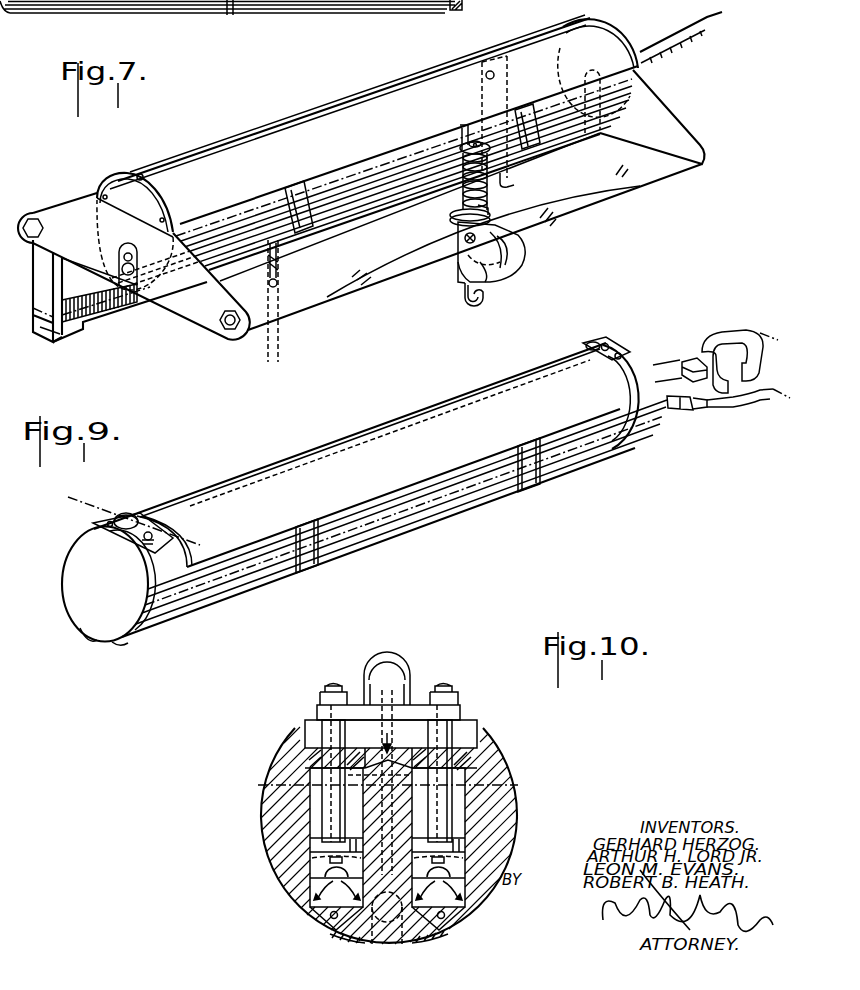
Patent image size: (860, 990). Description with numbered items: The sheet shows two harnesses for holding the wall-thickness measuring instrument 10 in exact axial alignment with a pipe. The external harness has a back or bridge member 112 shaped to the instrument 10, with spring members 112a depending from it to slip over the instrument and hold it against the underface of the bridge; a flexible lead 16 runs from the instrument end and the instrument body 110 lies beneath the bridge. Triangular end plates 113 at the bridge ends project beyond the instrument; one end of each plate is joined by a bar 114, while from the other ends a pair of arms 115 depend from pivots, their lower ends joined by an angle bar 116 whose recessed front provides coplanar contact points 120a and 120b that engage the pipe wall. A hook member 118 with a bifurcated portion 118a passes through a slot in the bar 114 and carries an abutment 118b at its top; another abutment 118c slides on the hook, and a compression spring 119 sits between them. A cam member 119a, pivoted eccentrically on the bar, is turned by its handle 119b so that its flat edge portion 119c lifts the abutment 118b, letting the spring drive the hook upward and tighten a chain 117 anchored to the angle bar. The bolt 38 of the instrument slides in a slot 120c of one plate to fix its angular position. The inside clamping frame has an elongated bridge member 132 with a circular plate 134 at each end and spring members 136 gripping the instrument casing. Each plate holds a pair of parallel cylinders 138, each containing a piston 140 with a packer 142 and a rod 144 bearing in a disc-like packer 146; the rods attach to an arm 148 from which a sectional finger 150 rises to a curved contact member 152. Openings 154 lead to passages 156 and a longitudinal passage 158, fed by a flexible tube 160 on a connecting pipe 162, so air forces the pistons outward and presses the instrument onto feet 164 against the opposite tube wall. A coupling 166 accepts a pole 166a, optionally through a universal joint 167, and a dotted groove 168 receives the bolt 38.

In FIG. 7, the instrument 10 is at (362, 92).
In FIG. 9, the instrument 10 is at (88, 496).
In FIG. 7, the cable conduit 16 is at (666, 38).
In FIG. 7, the lamp tube 110 is at (367, 160).
In FIG. 7, the bridge member 112 is at (262, 131).
In FIG. 7, the spring members 112a is at (296, 188).
In FIG. 7, the triangular end plates 113 is at (58, 210).
In FIG. 7, the bar 114 is at (325, 305).
In FIG. 7, the arms 115 is at (33, 281).
In FIG. 7, the angle bar 116 is at (124, 313).
In FIG. 7, the chain 117 is at (268, 352).
In FIG. 7, the hook member 118 is at (473, 300).
In FIG. 7, the bifurcated portion 118a is at (460, 278).
In FIG. 7, the abutment 118b is at (462, 140).
In FIG. 7, the abutment 118c is at (490, 208).
In FIG. 7, the compression spring 119 is at (455, 160).
In FIG. 7, the cam member 119a is at (458, 238).
In FIG. 7, the handle 119b is at (493, 276).
In FIG. 7, the flat edge portion 119c is at (512, 255).
In FIG. 7, the contact point 120a is at (72, 336).
In FIG. 7, the contact point 120b is at (510, 183).
In FIG. 7, the slot 120c is at (118, 248).
In FIG. 9, the bridge member 132 is at (285, 458).
In FIG. 9, the circular plate 134 is at (167, 620).
In FIG. 10, the circular plate 134 is at (290, 888).
In FIG. 9, the spring members 136 is at (312, 572).
In FIG. 10, the cylinders 138 is at (315, 795).
In FIG. 10, the piston 140 is at (312, 845).
In FIG. 10, the packer 142 is at (312, 862).
In FIG. 10, the rod 144 is at (330, 725).
In FIG. 10, the disc-like packer 146 is at (305, 760).
In FIG. 10, the arm 148 is at (428, 710).
In FIG. 9, the finger 150 is at (125, 538).
In FIG. 10, the finger 150 is at (405, 690).
In FIG. 9, the contact member 152 is at (122, 512).
In FIG. 10, the contact member 152 is at (390, 652).
In FIG. 10, the openings 154 is at (320, 918).
In FIG. 10, the passages 156 is at (400, 818).
In FIG. 9, the passage 158 is at (400, 413).
In FIG. 9, the flexible tube 160 is at (755, 400).
In FIG. 9, the connecting pipe 162 is at (680, 410).
In FIG. 9, the feet 164 is at (97, 640).
In FIG. 10, the feet 164 is at (330, 942).
In FIG. 9, the coupling 166 is at (692, 361).
In FIG. 9, the pole 166a is at (757, 330).
In FIG. 9, the universal joint 167 is at (727, 333).
In FIG. 10, the groove 168 is at (385, 926).
In FIG. 10, the bolt 38 is at (386, 892).